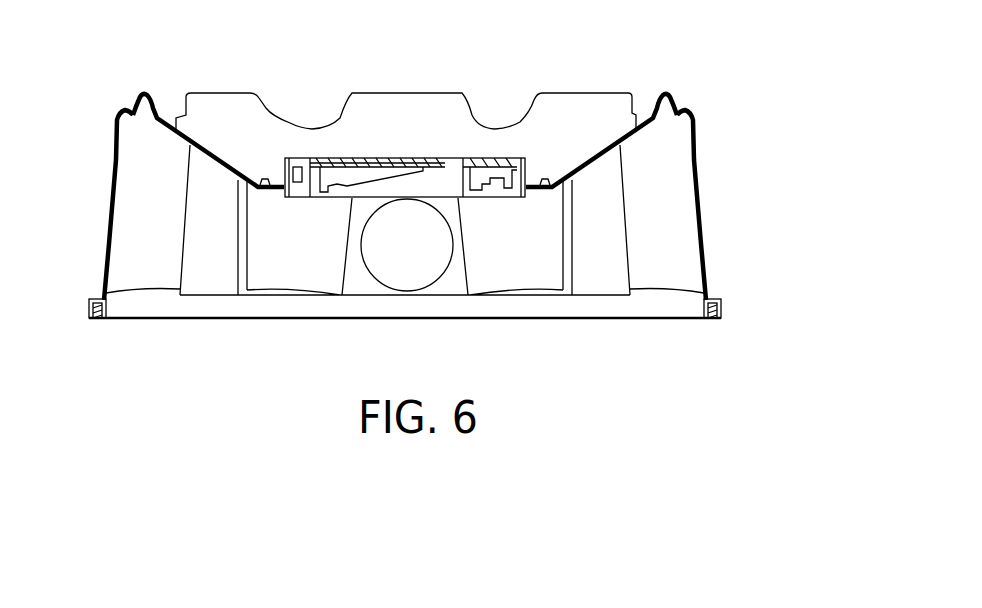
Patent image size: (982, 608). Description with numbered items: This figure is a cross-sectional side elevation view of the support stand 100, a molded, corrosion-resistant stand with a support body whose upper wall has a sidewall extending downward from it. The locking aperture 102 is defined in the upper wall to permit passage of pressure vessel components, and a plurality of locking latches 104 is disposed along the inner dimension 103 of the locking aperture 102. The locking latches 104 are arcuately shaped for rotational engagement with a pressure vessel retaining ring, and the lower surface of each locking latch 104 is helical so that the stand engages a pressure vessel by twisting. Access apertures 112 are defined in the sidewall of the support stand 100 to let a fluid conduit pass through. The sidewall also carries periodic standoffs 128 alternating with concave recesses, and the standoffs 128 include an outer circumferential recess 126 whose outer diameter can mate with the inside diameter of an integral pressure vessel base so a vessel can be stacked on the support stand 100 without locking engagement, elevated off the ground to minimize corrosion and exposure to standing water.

The support stand 100 is at (429, 196).
The locking aperture 102 is at (405, 154).
The inner dimension 103 is at (447, 192).
The locking latches 104 is at (383, 158).
The access apertures 112 is at (108, 245).
The outer circumferential recess 126 is at (131, 107).
The standoffs 128 is at (148, 97).